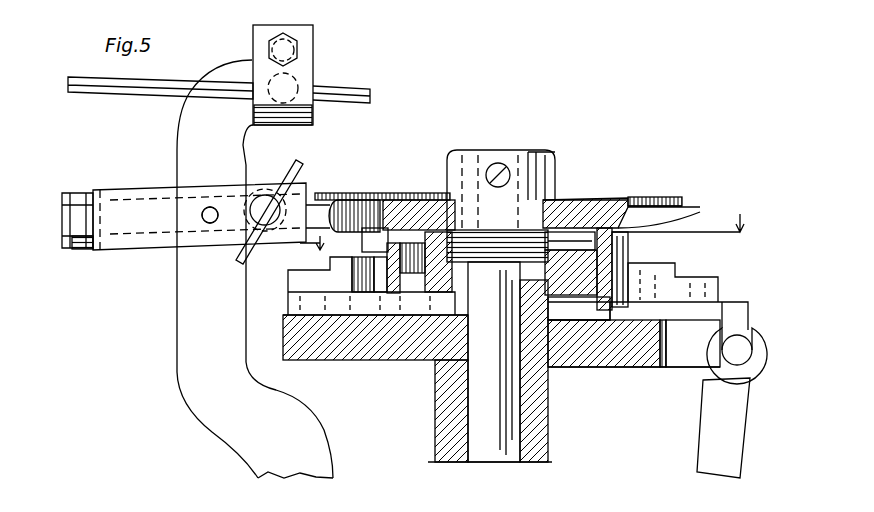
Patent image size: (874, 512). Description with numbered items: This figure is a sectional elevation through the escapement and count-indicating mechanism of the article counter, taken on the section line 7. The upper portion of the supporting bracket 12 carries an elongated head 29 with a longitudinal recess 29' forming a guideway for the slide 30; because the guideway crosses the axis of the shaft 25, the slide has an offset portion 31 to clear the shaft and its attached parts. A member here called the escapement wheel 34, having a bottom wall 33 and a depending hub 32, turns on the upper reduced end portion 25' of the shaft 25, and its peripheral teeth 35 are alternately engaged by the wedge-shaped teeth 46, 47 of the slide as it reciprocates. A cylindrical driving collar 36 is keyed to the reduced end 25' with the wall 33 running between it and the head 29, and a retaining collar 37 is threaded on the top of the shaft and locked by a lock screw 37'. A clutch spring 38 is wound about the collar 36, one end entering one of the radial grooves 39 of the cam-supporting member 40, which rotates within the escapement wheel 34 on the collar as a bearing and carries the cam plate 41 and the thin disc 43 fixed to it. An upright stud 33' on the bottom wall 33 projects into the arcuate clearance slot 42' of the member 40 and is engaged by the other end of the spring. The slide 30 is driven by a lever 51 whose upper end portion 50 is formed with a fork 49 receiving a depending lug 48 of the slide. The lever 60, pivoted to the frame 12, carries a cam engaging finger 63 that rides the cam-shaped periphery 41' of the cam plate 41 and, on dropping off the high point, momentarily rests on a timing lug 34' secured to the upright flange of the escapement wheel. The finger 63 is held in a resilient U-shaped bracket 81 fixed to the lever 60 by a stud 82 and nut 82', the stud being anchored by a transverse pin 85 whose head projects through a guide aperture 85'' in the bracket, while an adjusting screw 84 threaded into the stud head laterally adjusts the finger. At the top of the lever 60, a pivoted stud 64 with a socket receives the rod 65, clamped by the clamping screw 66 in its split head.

The section line 7- 7 is at (516, 240).
The supporting bracket 12 is at (424, 466).
The shaft 25 is at (524, 362).
The upper reduced end portion of the shaft 25' is at (498, 182).
The elongated head 29 is at (375, 354).
The longitudinally extending recess 29' is at (351, 322).
The slide 30 is at (382, 318).
The offset portion of the slide 31 is at (548, 310).
The depending hub 32 is at (525, 350).
The bottom wall 33 is at (648, 357).
The upright stud 33' is at (419, 320).
The escapement wheel 34 is at (609, 269).
The timing lug 34' is at (408, 205).
The circumferentially spaced teeth 35 is at (628, 262).
The cylindrical driving collar 36 is at (585, 198).
The retaining collar 37 is at (517, 177).
The lock screw 37' is at (494, 143).
The clutch spring 38 is at (466, 228).
The radial grooves 39 is at (640, 198).
The cam-supporting member 40 is at (650, 200).
The cam plate 41 is at (603, 158).
The cam-shaped periphery 41' is at (683, 203).
The arcuately formed clearance slot 42' is at (382, 206).
The thin disc 43 is at (690, 209).
The wedge-shaped tooth 46 is at (368, 272).
The wedge-shaped tooth 47 is at (716, 290).
The depending lug 48 is at (750, 335).
The fork 49 is at (748, 370).
The upper end portion of the lever 50 is at (760, 343).
The lever 51 is at (740, 446).
The lever 60 is at (176, 328).
The cam engaging member or finger 63 is at (350, 210).
The stud 64 is at (307, 72).
The rod 65 is at (128, 86).
The clamping screw 66 is at (298, 46).
The resilient U-shaped bracket 81 is at (136, 190).
The stud 82 is at (64, 221).
The nut 82' is at (80, 259).
The adjusting screw 84 is at (258, 212).
The transverse pin 85 is at (174, 246).
The guide aperture 85'' is at (220, 188).